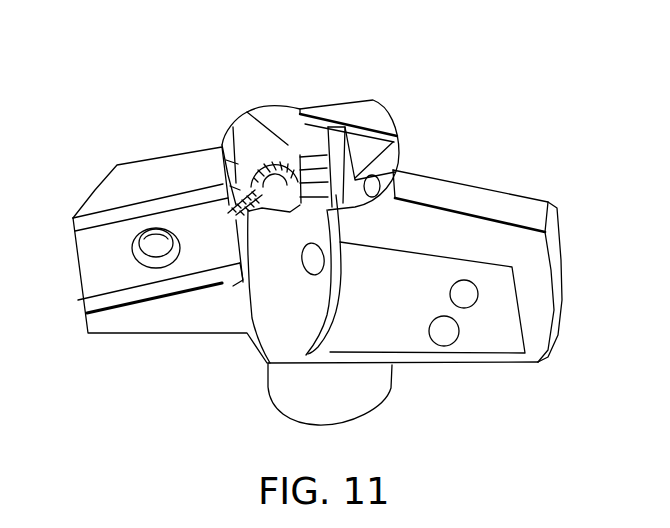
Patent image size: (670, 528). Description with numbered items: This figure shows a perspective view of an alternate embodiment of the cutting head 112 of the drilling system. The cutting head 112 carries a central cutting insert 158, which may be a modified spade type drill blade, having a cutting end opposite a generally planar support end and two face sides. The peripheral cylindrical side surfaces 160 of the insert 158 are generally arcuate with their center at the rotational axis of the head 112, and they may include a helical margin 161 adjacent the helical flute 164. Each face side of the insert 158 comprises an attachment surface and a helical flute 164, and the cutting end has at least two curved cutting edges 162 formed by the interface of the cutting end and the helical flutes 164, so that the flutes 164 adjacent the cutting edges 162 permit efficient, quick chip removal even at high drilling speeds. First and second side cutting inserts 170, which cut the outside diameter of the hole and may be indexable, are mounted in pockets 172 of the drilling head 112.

The cutting head 112 is at (83, 78).
The central cutting insert 158 is at (320, 99).
The peripheral cylindrical side surfaces 160 is at (233, 192).
The helical margin 161 is at (231, 196).
The curved cutting edges 162 is at (267, 163).
The helical flute 164 is at (247, 205).
The side cutting inserts 170 is at (103, 208).
The pockets 172 is at (229, 286).